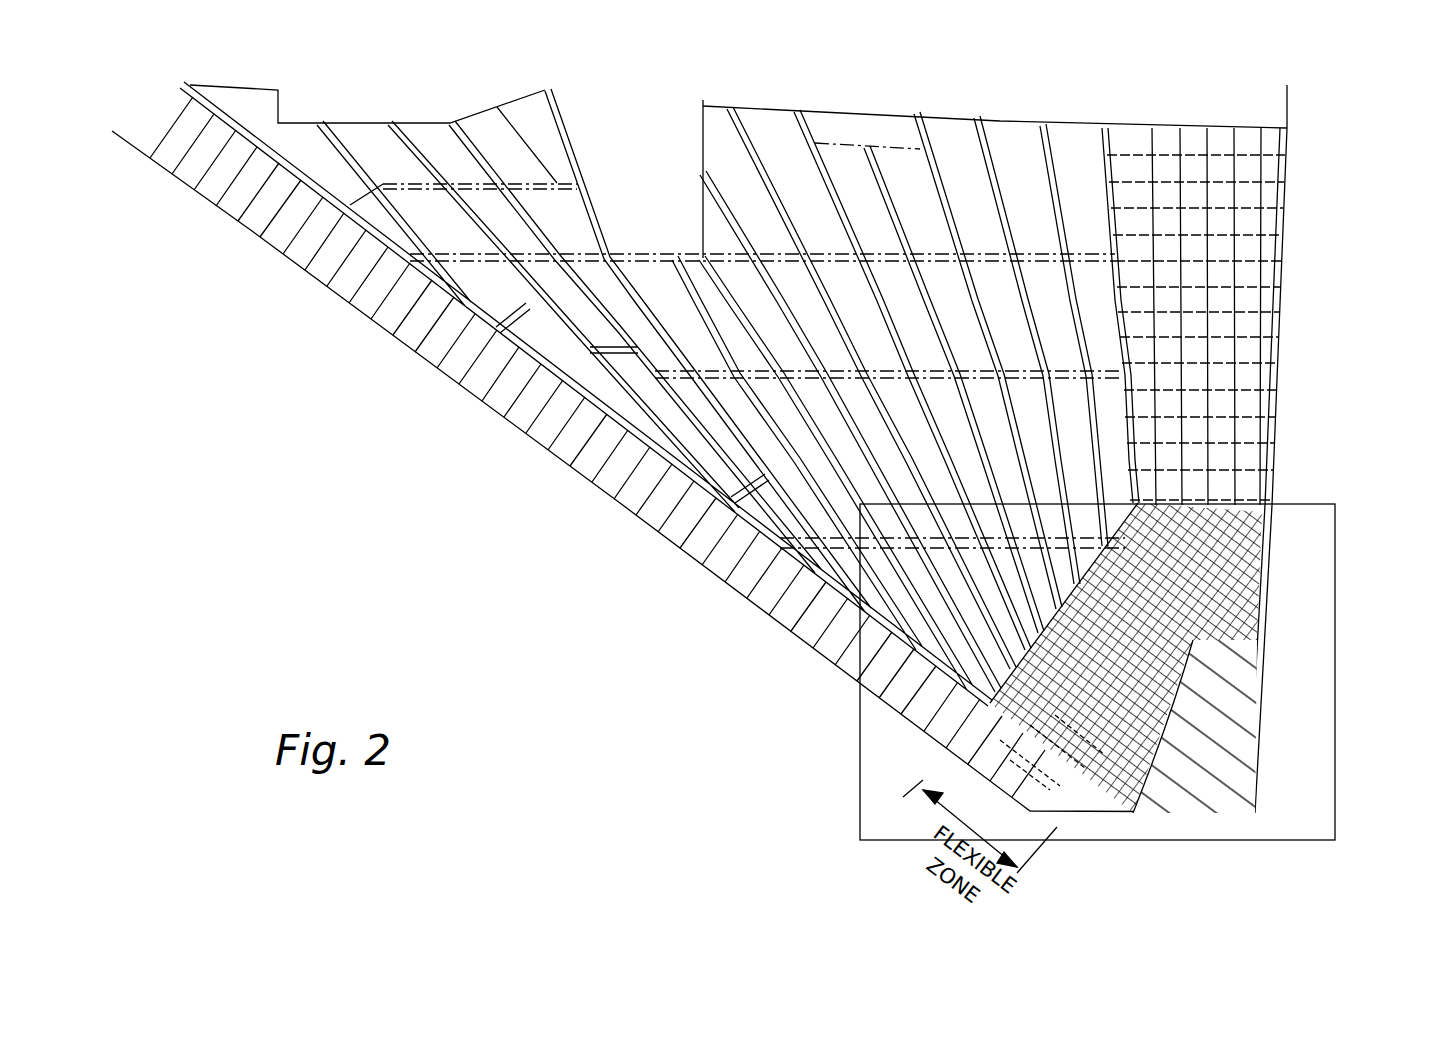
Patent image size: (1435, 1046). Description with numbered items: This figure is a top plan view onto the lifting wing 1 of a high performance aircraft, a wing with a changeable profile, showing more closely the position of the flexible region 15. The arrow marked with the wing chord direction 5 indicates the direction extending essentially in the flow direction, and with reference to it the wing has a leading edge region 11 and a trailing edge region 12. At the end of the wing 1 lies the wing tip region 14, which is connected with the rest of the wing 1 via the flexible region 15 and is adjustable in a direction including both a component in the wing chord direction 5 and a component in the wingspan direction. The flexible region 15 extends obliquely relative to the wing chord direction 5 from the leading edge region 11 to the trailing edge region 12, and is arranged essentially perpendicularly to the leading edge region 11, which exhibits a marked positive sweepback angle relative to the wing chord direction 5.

The lifting wing 1 is at (692, 712).
The wing chord direction 5 is at (553, 533).
The leading edge region 11 is at (666, 520).
The trailing edge region 12 is at (1250, 466).
The wing tip region 14 is at (1207, 731).
The flexible region 15 is at (1077, 703).